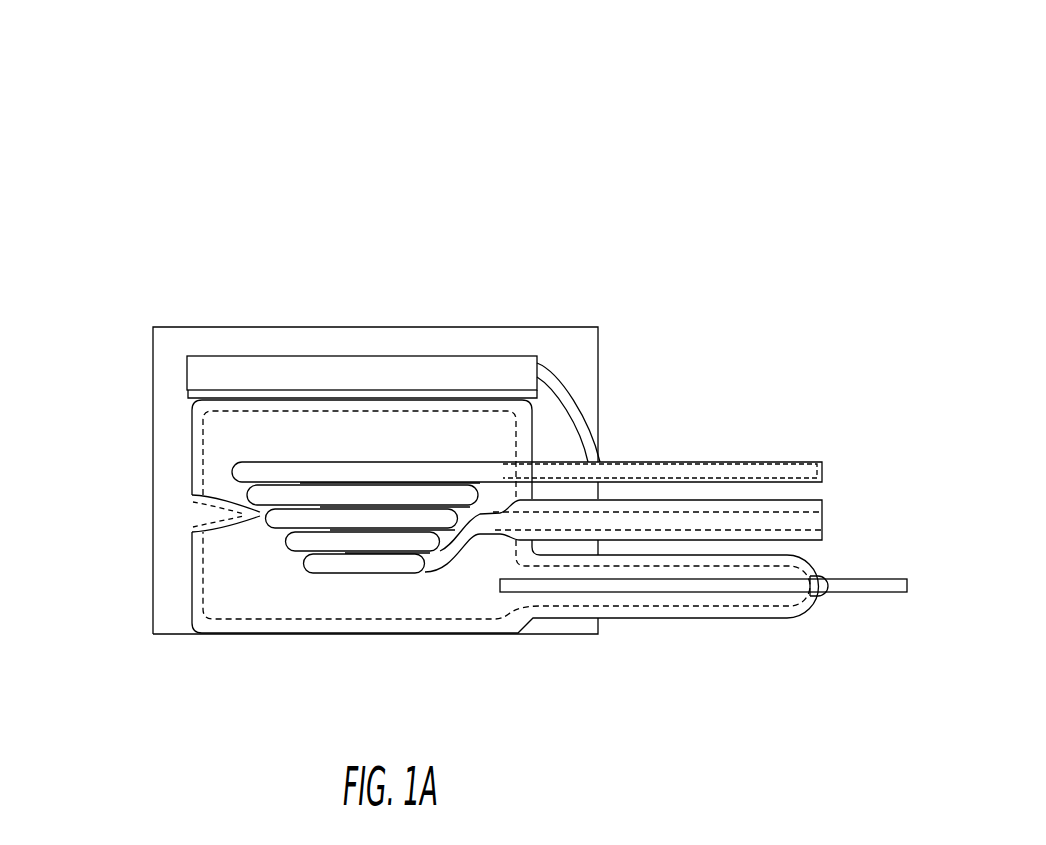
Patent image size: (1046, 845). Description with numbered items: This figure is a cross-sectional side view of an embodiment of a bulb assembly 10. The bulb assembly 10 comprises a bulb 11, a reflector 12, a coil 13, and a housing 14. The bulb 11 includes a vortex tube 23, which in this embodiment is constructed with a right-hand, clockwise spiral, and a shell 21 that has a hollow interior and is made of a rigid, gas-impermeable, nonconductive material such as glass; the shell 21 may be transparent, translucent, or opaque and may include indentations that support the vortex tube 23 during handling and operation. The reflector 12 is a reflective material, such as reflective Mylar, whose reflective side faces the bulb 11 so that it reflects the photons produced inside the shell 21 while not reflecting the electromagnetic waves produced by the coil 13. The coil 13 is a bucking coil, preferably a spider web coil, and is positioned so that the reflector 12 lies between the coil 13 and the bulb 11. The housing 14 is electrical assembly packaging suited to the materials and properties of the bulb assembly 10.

The bulb assembly 10 is at (546, 142).
The bulb 11 is at (425, 634).
The reflector 12 is at (190, 402).
The coil 13 is at (492, 375).
The housing 14 is at (599, 391).
The shell 21 is at (222, 634).
The vortex tube 23 is at (315, 573).